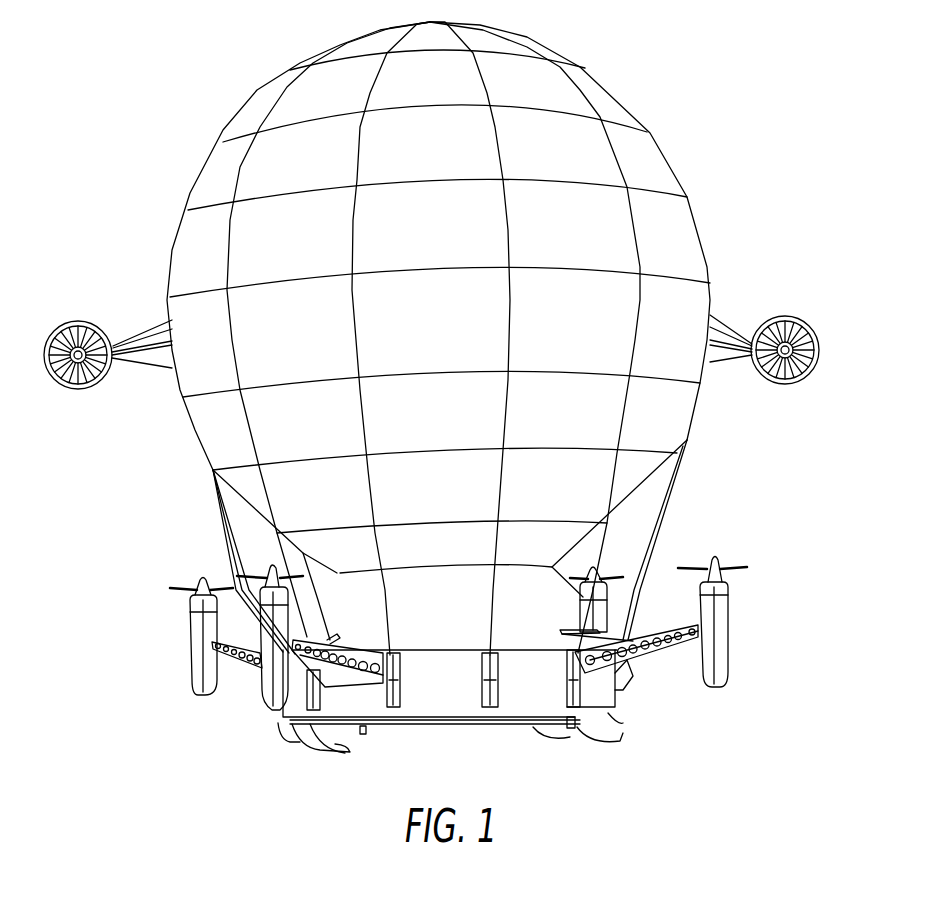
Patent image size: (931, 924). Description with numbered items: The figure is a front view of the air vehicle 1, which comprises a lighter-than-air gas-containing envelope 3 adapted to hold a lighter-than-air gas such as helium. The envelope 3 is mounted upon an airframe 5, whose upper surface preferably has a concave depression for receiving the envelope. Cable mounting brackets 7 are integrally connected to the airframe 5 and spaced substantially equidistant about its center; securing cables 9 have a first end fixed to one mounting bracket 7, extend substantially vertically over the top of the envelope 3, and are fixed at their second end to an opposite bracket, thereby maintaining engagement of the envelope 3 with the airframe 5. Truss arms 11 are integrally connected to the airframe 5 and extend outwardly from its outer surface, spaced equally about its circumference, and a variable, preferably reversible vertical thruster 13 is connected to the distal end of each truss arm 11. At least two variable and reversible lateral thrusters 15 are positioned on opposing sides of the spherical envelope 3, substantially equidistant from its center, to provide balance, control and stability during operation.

The air vehicle 1 is at (96, 97).
The lighter-than-air gas-containing envelope 3 is at (263, 90).
The airframe 5 is at (427, 700).
The cable mounting bracket 7 is at (388, 703).
The securing cable 9 is at (218, 513).
The truss arm 11 is at (243, 667).
The vertical thruster 13 is at (190, 643).
The lateral thruster 15 is at (77, 321).